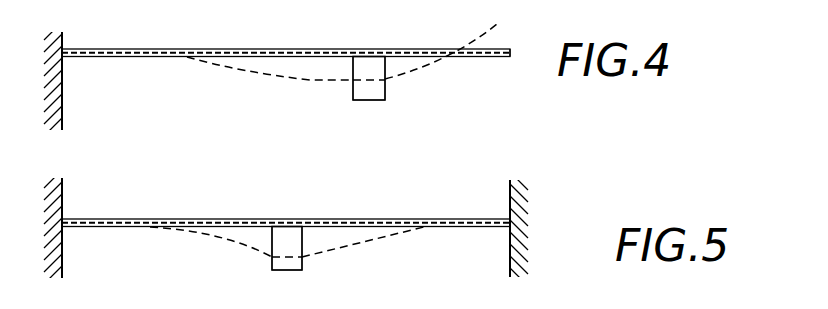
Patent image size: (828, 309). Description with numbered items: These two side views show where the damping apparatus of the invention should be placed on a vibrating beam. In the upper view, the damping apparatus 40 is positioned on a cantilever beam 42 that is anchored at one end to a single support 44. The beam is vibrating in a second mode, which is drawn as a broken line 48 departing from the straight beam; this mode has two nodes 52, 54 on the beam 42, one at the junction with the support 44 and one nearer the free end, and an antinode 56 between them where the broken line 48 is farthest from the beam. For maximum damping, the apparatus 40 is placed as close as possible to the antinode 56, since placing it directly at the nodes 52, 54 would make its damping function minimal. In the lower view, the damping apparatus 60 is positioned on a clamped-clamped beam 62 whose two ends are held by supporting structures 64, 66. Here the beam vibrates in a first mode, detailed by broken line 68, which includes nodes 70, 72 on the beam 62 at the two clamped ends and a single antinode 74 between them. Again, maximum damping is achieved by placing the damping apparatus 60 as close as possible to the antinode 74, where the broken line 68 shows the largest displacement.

In FIG. 4, the damping apparatus 40 is at (390, 91).
In FIG. 4, the cantilever beam 42 is at (268, 50).
In FIG. 4, the support 44 is at (65, 100).
In FIG. 4, the broken line 48 is at (311, 78).
In FIG. 4, the node 52 is at (63, 52).
In FIG. 4, the node 54 is at (463, 52).
In FIG. 4, the antinode 56 is at (371, 80).
In FIG. 5, the damping apparatus 60 is at (262, 238).
In FIG. 5, the clamped-clamped beam 62 is at (348, 220).
In FIG. 5, the supporting structure 64 is at (63, 219).
In FIG. 5, the supporting structure 66 is at (510, 195).
In FIG. 5, the broken line 68 is at (357, 243).
In FIG. 5, the node 70 is at (510, 227).
In FIG. 5, the node 72 is at (65, 243).
In FIG. 5, the antinode 74 is at (286, 256).